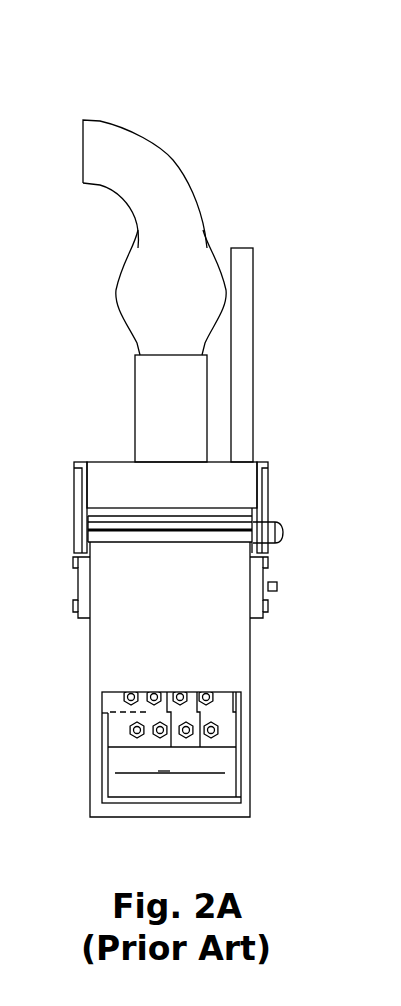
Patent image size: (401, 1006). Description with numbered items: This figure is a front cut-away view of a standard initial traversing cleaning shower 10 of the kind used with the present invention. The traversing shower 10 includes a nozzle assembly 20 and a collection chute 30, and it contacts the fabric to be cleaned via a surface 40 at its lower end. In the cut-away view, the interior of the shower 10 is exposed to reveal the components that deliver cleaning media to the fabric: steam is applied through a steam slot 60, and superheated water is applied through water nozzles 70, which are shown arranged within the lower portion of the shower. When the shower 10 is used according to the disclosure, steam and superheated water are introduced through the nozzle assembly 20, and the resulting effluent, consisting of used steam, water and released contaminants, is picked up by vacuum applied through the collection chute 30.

The traversing shower 10 is at (135, 78).
The nozzle assembly 20 is at (250, 650).
The collection chute 30 is at (173, 157).
The surface 40 is at (213, 818).
The steam slot 60 is at (140, 773).
The water nozzles 70 is at (130, 712).